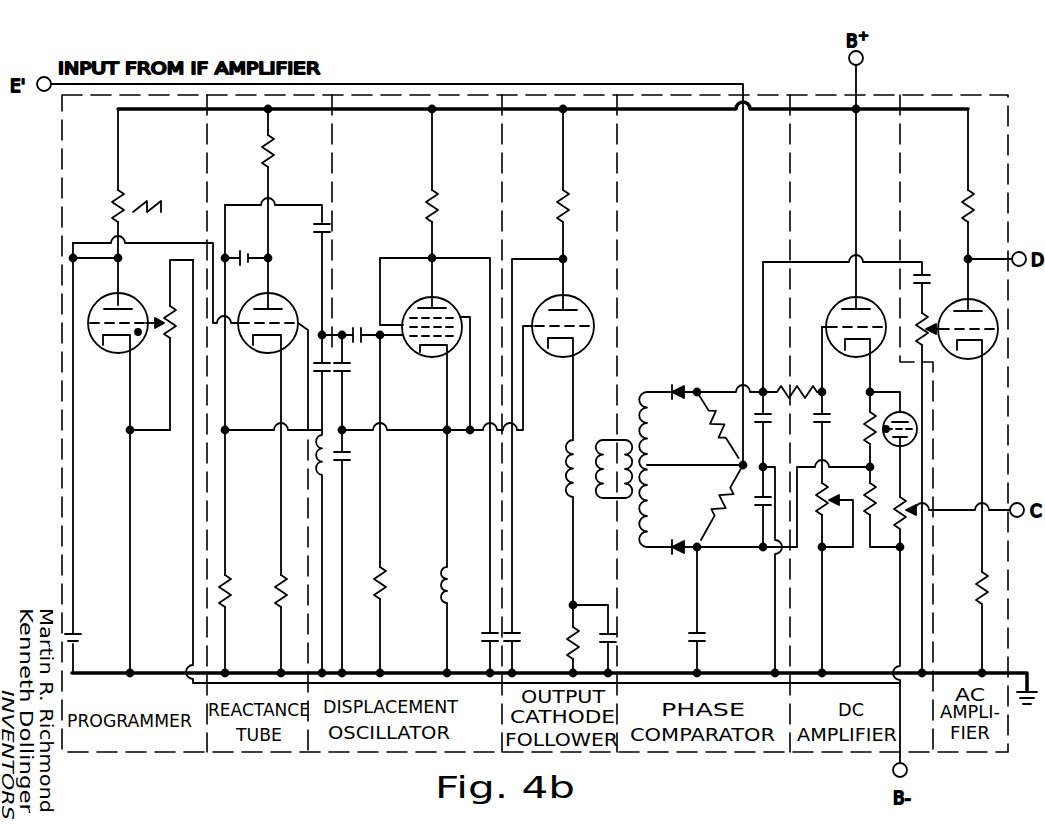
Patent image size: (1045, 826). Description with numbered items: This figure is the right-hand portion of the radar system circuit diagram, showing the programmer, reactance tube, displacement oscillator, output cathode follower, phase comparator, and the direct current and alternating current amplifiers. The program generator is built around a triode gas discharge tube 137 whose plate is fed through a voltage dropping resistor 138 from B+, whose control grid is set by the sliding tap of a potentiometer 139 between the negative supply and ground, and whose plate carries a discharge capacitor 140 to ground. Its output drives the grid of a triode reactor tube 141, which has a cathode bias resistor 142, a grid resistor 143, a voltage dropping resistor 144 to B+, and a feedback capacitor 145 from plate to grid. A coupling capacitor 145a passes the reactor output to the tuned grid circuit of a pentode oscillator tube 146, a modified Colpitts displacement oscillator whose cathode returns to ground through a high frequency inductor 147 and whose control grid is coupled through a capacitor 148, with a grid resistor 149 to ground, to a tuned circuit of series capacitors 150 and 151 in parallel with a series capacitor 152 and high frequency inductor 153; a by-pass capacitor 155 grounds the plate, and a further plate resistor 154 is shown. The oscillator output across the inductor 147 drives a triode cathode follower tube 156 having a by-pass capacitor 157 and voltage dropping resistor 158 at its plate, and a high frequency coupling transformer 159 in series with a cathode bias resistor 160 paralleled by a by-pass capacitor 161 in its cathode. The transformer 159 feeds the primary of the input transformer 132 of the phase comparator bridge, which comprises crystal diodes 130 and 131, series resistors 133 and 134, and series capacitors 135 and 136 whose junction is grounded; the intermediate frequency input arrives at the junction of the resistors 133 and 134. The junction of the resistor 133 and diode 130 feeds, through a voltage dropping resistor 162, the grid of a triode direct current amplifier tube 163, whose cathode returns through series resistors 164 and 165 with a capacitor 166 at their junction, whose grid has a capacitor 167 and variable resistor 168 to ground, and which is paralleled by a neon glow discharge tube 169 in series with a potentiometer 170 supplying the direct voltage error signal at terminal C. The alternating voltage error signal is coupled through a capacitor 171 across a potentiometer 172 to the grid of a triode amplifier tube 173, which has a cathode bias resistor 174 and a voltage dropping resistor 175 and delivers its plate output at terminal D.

The crystal diode 130 is at (674, 385).
The crystal diode 131 is at (672, 553).
The input transformer 132 is at (639, 420).
The resistor 133 is at (716, 428).
The resistor 134 is at (716, 503).
The capacitor 135 is at (769, 423).
The capacitor 136 is at (757, 503).
The triode gas discharge tube 137 is at (103, 306).
The voltage dropping resistor 138 is at (113, 212).
The potentiometer 139 is at (165, 312).
The discharge capacitor 140 is at (80, 640).
The triode reactor tube 141 is at (279, 304).
The cathode bias resistor 142 is at (275, 590).
The grid resistor 143 is at (227, 577).
The voltage dropping resistor 144 is at (262, 160).
The feedback capacitor 145 is at (250, 253).
The coupling capacitor 145a is at (314, 228).
The pentode oscillator tube 146 is at (452, 306).
The high frequency inductor 147 is at (449, 594).
The capacitor 148 is at (359, 328).
The grid resistor 149 is at (386, 597).
The capacitor 150 is at (346, 373).
The capacitor 151 is at (346, 461).
The capacitor 152 is at (326, 373).
The high frequency inductor 153 is at (317, 456).
The resistor 154 is at (426, 207).
The by-pass capacitor 155 is at (483, 637).
The triode cathode follower tube 156 is at (581, 305).
The by-pass capacitor 157 is at (516, 645).
The voltage dropping resistor 158 is at (558, 207).
The high frequency coupling transformer 159 is at (580, 447).
The cathode bias resistor 160 is at (567, 638).
The by-pass capacitor 161 is at (601, 638).
The voltage dropping resistor 162 is at (791, 386).
The triode direct current amplifier tube 163 is at (836, 310).
The resistor 164 is at (866, 434).
The resistor 165 is at (875, 500).
The capacitor 166 is at (704, 642).
The capacitor 167 is at (831, 418).
The variable resistor 168 is at (826, 500).
The neon glow discharge tube 169 is at (903, 412).
The potentiometer 170 is at (904, 518).
The capacitor 171 is at (926, 280).
The potentiometer 172 is at (926, 320).
The triode amplifier tube 173 is at (972, 306).
The cathode bias resistor 174 is at (978, 590).
The voltage dropping resistor 175 is at (962, 205).